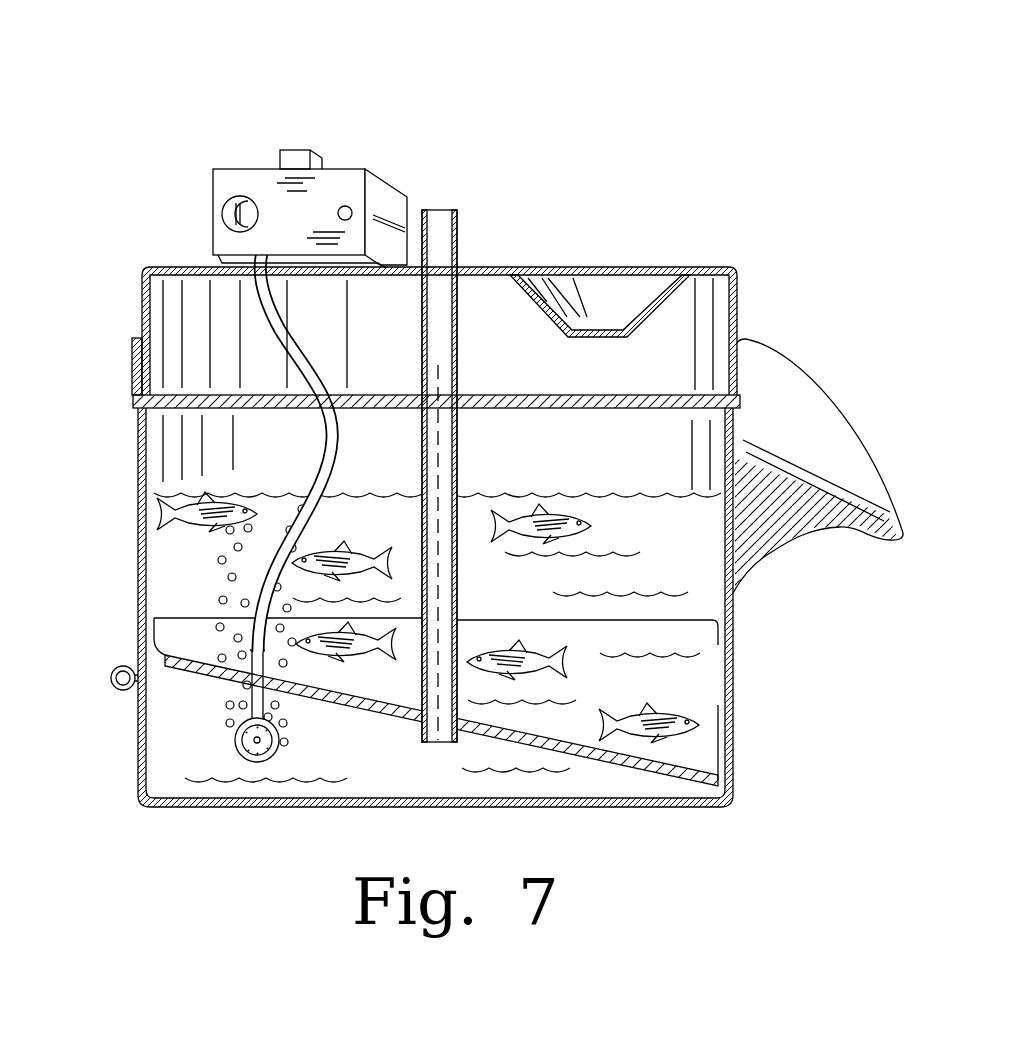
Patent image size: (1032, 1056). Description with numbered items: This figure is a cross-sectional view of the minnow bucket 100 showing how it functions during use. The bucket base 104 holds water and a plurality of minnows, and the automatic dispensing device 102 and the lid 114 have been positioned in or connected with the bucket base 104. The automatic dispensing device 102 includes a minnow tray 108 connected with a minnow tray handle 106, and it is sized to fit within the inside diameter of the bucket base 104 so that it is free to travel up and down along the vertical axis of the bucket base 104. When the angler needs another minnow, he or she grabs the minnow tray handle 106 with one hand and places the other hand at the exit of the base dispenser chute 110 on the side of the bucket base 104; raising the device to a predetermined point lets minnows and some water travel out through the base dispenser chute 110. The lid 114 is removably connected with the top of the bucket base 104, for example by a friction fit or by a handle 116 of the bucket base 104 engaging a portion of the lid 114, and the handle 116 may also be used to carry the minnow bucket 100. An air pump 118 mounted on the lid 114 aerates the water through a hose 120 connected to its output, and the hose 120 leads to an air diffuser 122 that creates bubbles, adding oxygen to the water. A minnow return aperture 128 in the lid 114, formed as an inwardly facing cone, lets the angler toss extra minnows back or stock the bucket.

The minnow bucket 100 is at (612, 98).
The automatic dispensing device 102 is at (480, 616).
The bucket base 104 is at (140, 484).
The minnow tray handle 106 is at (458, 360).
The minnow tray 108 is at (565, 730).
The base dispenser chute 110 is at (818, 398).
The lid 114 is at (142, 290).
The handle 116 is at (110, 677).
The air pump 118 is at (252, 169).
The hose 120 is at (312, 480).
The air diffuser 122 is at (237, 742).
The minnow return aperture 128 is at (612, 293).